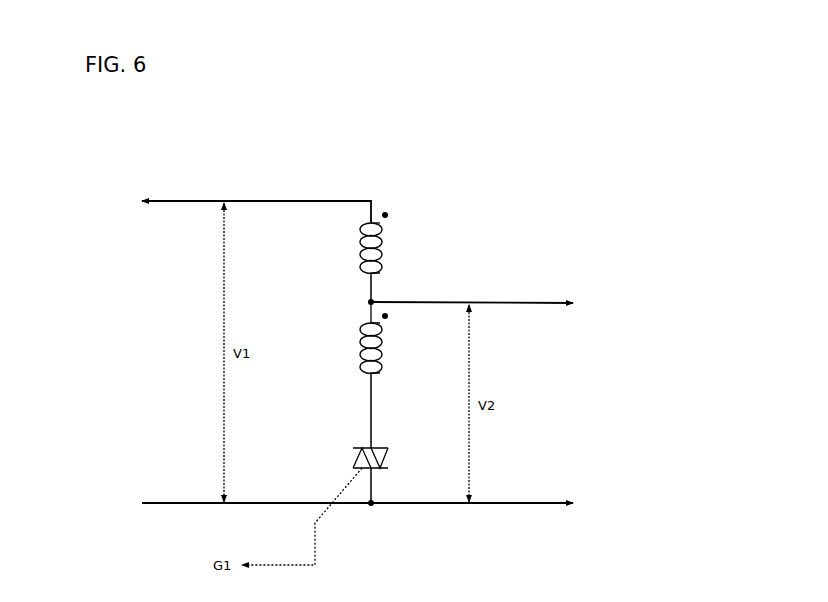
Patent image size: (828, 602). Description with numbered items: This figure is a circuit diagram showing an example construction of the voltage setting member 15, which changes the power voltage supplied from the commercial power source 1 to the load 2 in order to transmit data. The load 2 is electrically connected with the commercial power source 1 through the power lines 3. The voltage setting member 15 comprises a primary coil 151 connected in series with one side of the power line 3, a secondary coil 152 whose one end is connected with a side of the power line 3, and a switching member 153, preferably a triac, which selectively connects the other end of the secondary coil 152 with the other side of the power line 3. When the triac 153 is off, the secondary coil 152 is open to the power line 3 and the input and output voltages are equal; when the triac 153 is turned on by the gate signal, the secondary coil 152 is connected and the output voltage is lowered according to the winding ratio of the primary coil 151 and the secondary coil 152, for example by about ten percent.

The commercial power source 1 is at (90, 342).
The load 2 is at (623, 400).
The power lines 3 is at (276, 201).
The voltage setting member 15 is at (488, 210).
The primary coil 151 is at (383, 248).
The secondary coil 152 is at (383, 348).
The switching member 153 is at (389, 458).